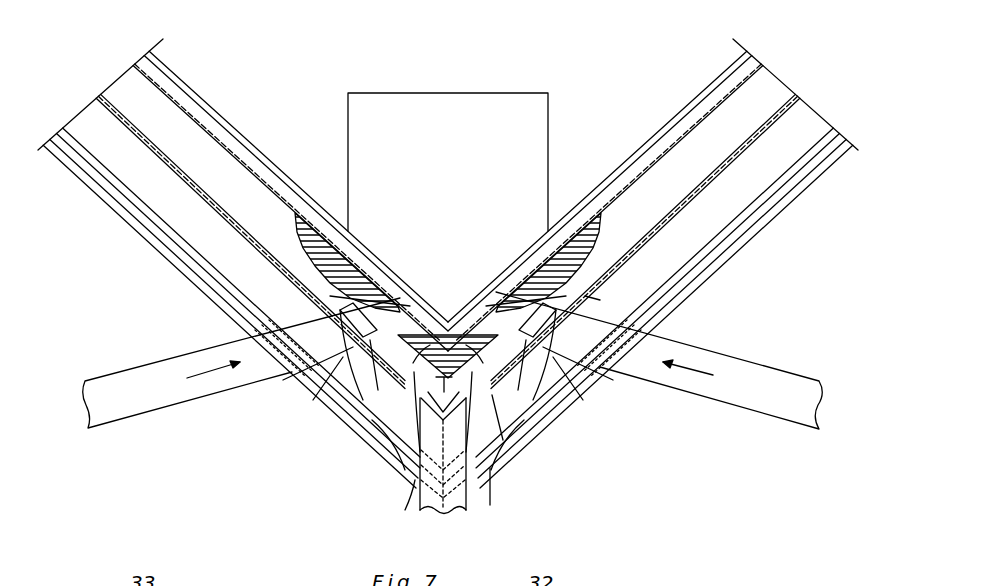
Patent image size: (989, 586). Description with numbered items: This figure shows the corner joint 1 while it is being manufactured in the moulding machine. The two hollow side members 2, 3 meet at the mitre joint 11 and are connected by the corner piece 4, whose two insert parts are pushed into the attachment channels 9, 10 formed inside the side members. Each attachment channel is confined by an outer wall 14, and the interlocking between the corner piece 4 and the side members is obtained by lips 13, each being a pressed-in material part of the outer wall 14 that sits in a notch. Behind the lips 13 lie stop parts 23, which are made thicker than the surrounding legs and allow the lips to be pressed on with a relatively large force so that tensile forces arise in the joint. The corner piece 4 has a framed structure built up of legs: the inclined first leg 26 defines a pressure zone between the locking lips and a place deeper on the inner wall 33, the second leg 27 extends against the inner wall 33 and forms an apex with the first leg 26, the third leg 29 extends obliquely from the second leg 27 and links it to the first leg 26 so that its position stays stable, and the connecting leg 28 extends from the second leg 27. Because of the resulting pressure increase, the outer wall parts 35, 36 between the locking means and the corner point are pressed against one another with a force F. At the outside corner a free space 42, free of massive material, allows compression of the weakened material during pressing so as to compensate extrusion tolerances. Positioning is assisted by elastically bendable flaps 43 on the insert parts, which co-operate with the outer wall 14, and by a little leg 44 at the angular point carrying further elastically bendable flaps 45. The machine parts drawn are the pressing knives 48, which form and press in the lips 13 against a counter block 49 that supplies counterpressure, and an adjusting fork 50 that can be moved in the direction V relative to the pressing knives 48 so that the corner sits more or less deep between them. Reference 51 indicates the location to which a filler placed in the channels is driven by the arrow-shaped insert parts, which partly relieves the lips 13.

The corner joint 1 is at (322, 504).
The hollow side member 2 is at (817, 127).
The hollow side member 3 is at (83, 140).
The corner piece 4 is at (300, 243).
The attachment channel 9 is at (780, 76).
The attachment channel 10 is at (123, 78).
The mitre joint 11 is at (420, 500).
The lip 13 is at (313, 363).
The outer wall 14 is at (92, 100).
The stop part 23 is at (350, 388).
The first leg 26 is at (330, 296).
The second leg 27 is at (358, 265).
The connecting leg 28 is at (413, 363).
The third leg 29 is at (353, 308).
The inner wall 33 is at (138, 62).
The outer wall part 35 is at (503, 440).
The outer wall part 36 is at (163, 160).
The free space 42 is at (455, 315).
The elastically bendable flap 43 is at (372, 420).
The little leg 44 is at (414, 470).
The elastically bendable flap 45 is at (395, 452).
The pressing knife 48 is at (120, 377).
The counter block 49 is at (450, 93).
The adjusting fork 50 is at (412, 507).
The filler location 51 is at (585, 296).
The pressing force F is at (450, 364).
The adjustment direction V is at (502, 486).